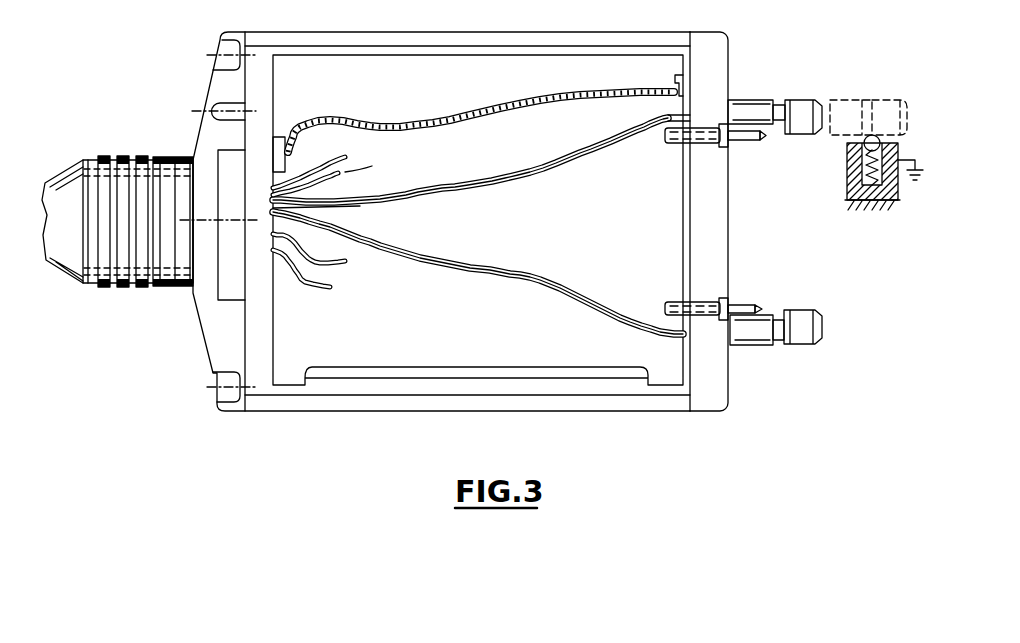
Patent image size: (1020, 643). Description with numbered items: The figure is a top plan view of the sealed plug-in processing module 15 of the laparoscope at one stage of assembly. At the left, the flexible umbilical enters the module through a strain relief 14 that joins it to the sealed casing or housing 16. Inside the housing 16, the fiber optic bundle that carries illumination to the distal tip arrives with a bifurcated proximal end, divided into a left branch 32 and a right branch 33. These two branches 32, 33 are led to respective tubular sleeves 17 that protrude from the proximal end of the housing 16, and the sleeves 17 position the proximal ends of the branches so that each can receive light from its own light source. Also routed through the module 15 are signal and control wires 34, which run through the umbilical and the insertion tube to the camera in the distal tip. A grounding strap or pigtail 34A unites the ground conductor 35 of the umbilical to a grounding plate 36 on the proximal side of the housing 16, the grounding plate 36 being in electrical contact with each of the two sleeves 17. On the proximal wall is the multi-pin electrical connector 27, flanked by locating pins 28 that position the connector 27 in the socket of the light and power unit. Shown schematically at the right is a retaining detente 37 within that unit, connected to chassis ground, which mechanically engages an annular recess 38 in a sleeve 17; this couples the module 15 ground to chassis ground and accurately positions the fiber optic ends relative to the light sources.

The strain relief 14 is at (121, 156).
The plug-in processing module 15 is at (418, 433).
The housing 16 is at (664, 400).
The tubular sleeves 17 is at (890, 100).
The multi-pin electrical connector 27 is at (718, 212).
The locating pins 28 is at (746, 146).
The left branch 32 is at (534, 277).
The right branch 33 is at (561, 163).
The signal and control wires 34 is at (325, 259).
The grounding straps 34A is at (487, 113).
The ground conductor 35 is at (284, 137).
The grounding plate 36 is at (690, 80).
The retaining detente 37 is at (846, 165).
The annular recess 38 is at (783, 99).